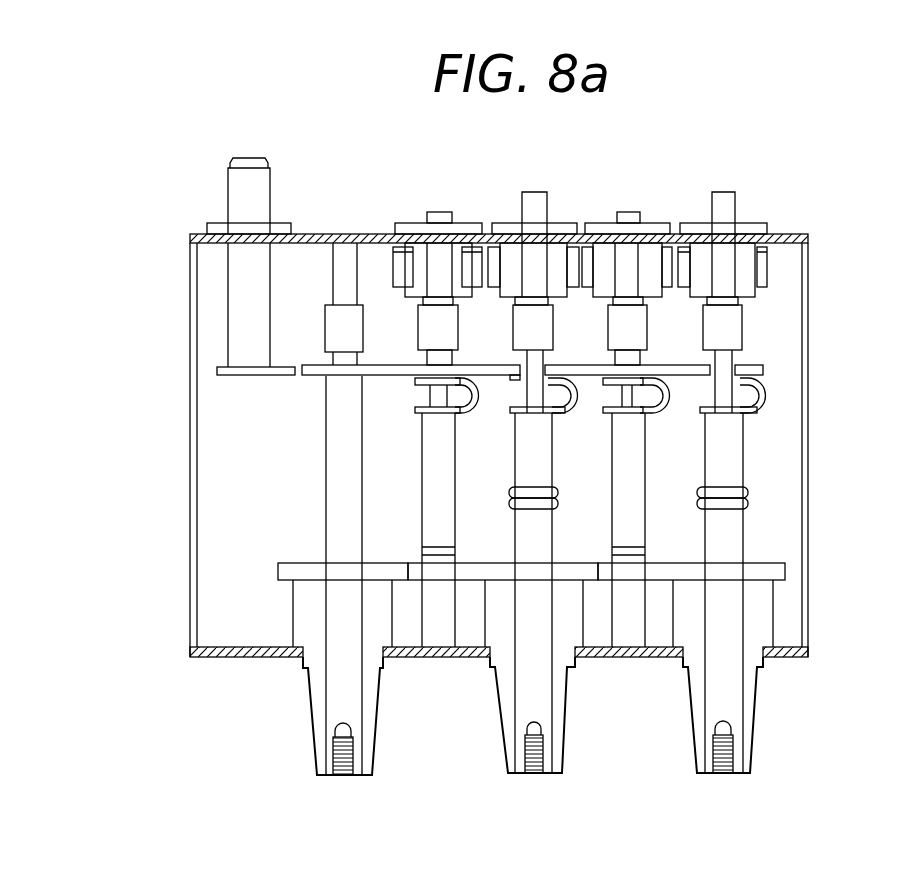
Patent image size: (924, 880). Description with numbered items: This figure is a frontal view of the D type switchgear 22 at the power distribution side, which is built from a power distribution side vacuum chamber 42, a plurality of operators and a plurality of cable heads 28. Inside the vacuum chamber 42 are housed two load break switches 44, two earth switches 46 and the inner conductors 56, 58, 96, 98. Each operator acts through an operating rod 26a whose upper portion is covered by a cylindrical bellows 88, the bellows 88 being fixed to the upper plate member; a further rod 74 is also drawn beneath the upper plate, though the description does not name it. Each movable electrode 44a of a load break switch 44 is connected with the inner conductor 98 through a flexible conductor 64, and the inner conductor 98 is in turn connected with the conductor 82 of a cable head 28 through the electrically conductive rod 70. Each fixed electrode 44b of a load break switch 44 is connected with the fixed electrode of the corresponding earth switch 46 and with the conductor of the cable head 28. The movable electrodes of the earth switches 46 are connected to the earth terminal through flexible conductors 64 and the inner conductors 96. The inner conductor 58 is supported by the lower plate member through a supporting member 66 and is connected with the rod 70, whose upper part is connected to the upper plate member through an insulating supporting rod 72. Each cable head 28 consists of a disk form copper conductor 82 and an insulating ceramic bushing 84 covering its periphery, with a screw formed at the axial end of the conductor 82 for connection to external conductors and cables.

The D type switchgear 22 is at (308, 122).
The operating rod 26a is at (538, 216).
The cable head 28 is at (387, 686).
The power distribution side vacuum chamber 42 is at (180, 541).
The load break switch 44 is at (765, 494).
The movable electrode 44a is at (720, 492).
The fixed electrode 44b is at (720, 505).
The earth switch 46 is at (656, 554).
The inner conductor 56 is at (303, 568).
The inner conductor 58 is at (491, 562).
The flexible conductor 64 is at (770, 395).
The supporting member 66 is at (441, 632).
The electrically conductive rod 70 is at (338, 452).
The insulating supporting rod 72 is at (737, 327).
The actuator rod 74 is at (343, 253).
The disk form copper conductor 82 is at (318, 692).
The insulating ceramic bushing 84 is at (750, 728).
The cylindrical bellows 88 is at (768, 268).
The inner conductor 96 is at (217, 375).
The inner conductor 98 is at (758, 363).